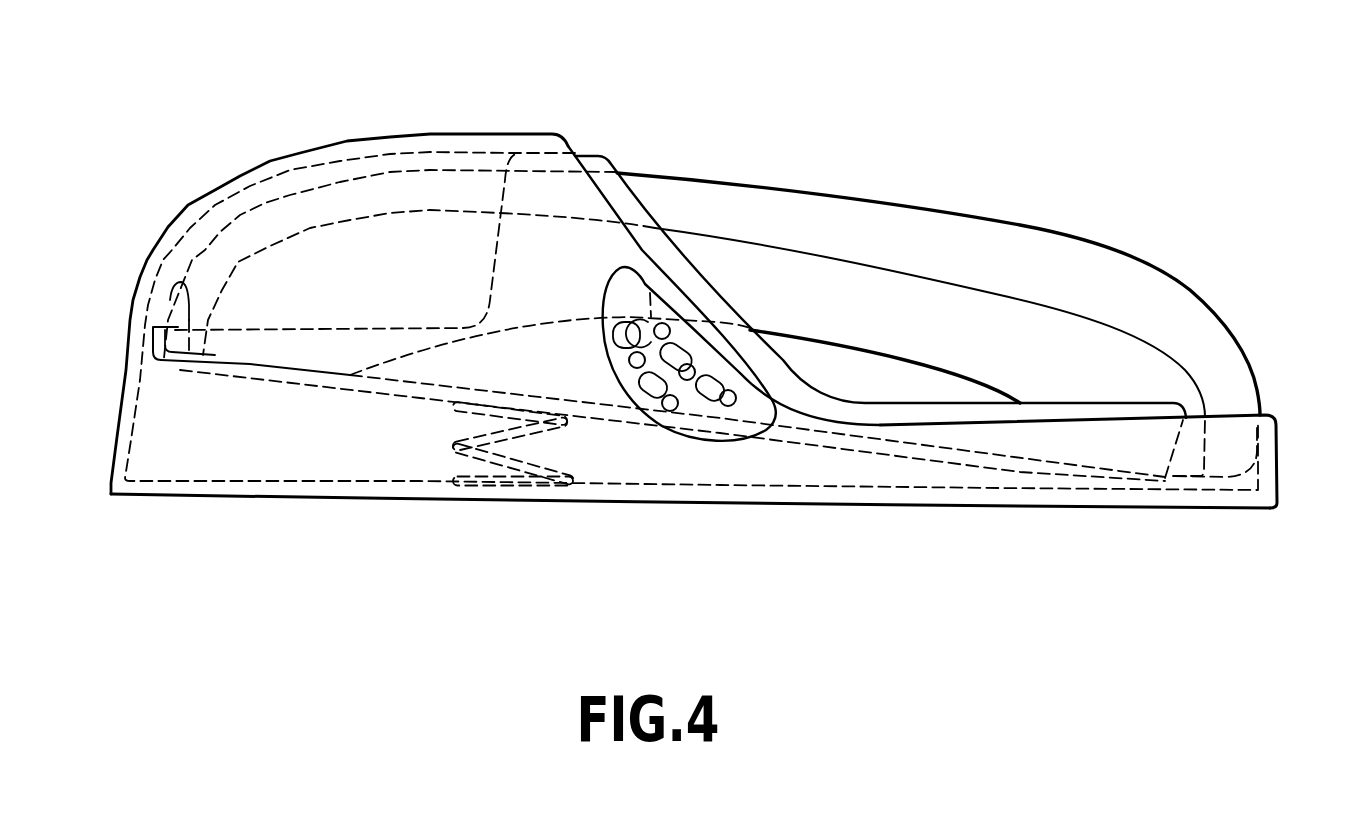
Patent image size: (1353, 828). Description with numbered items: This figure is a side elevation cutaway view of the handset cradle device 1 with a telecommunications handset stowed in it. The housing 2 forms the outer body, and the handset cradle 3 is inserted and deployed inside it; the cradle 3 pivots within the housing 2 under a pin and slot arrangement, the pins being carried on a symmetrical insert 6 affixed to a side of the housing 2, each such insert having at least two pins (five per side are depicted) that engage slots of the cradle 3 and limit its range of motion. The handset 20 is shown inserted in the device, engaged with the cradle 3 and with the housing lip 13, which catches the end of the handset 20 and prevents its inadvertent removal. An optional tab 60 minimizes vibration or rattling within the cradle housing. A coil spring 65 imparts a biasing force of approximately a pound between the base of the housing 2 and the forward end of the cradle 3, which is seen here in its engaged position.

The handset cradle device 1 is at (477, 533).
The housing 2 is at (357, 458).
The handset cradle 3 is at (592, 155).
The insert 6 is at (703, 412).
The housing lip 13 is at (1278, 428).
The handset 20 is at (805, 222).
The tab 60 is at (165, 303).
The coil spring 65 is at (510, 447).